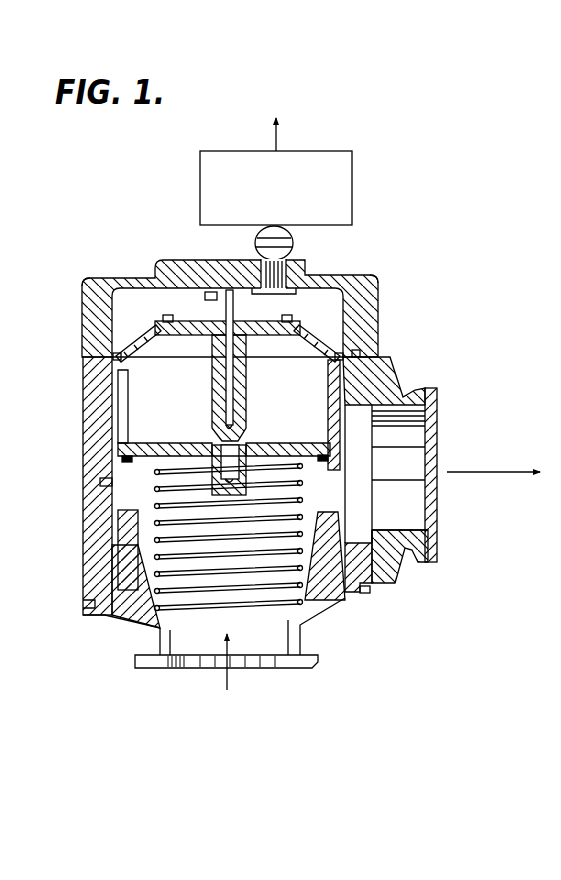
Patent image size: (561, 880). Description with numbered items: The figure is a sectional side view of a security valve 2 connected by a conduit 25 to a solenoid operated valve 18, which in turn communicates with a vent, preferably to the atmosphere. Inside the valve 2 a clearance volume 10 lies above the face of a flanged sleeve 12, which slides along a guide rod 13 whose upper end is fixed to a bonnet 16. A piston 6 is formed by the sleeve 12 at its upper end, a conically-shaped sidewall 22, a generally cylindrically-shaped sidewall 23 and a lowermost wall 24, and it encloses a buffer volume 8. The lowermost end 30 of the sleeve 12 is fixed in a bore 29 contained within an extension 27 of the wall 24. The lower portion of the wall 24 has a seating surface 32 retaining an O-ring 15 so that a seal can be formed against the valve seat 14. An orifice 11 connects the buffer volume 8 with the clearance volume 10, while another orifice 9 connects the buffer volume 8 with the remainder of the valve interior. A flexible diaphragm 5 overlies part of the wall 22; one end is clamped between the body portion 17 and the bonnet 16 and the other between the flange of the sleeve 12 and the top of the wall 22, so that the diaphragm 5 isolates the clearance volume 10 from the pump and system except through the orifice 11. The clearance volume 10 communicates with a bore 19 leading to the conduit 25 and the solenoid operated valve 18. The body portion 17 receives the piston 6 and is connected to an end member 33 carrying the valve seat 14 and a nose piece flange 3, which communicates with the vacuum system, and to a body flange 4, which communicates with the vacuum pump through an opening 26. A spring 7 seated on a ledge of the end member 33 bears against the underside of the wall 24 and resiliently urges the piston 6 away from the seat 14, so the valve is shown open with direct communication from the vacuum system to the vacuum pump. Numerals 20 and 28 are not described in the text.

The security valve 2 is at (109, 277).
The nose piece flange 3 is at (322, 660).
The body flange 4 is at (406, 396).
The flexible diaphragm 5 is at (114, 359).
The piston 6 is at (110, 418).
The spring 7 is at (312, 468).
The buffer volume 8 is at (306, 346).
The orifice 9 is at (326, 428).
The clearance volume 10 is at (102, 333).
The orifice 11 is at (204, 342).
The flanged sleeve 12 is at (196, 321).
The guide rod 13 is at (212, 297).
The valve seat 14 is at (118, 512).
The O-ring 15 is at (120, 458).
The bonnet 16 is at (80, 292).
The body portion 17 is at (100, 483).
The solenoid operated valve 18 is at (201, 152).
The bore 19 is at (272, 291).
The piston 20 is at (222, 442).
The conically-shaped sidewall 22 is at (142, 357).
The cylindrically-shaped sidewall 23 is at (131, 430).
The lowermost wall 24 is at (296, 442).
The conduit 25 is at (295, 243).
The opening 26 is at (379, 528).
The extension 27 is at (208, 456).
The chamber 28 is at (250, 376).
The bore 29 is at (156, 479).
The lowermost end 30 is at (362, 354).
The seating surface 32 is at (350, 478).
The end member 33 is at (92, 616).